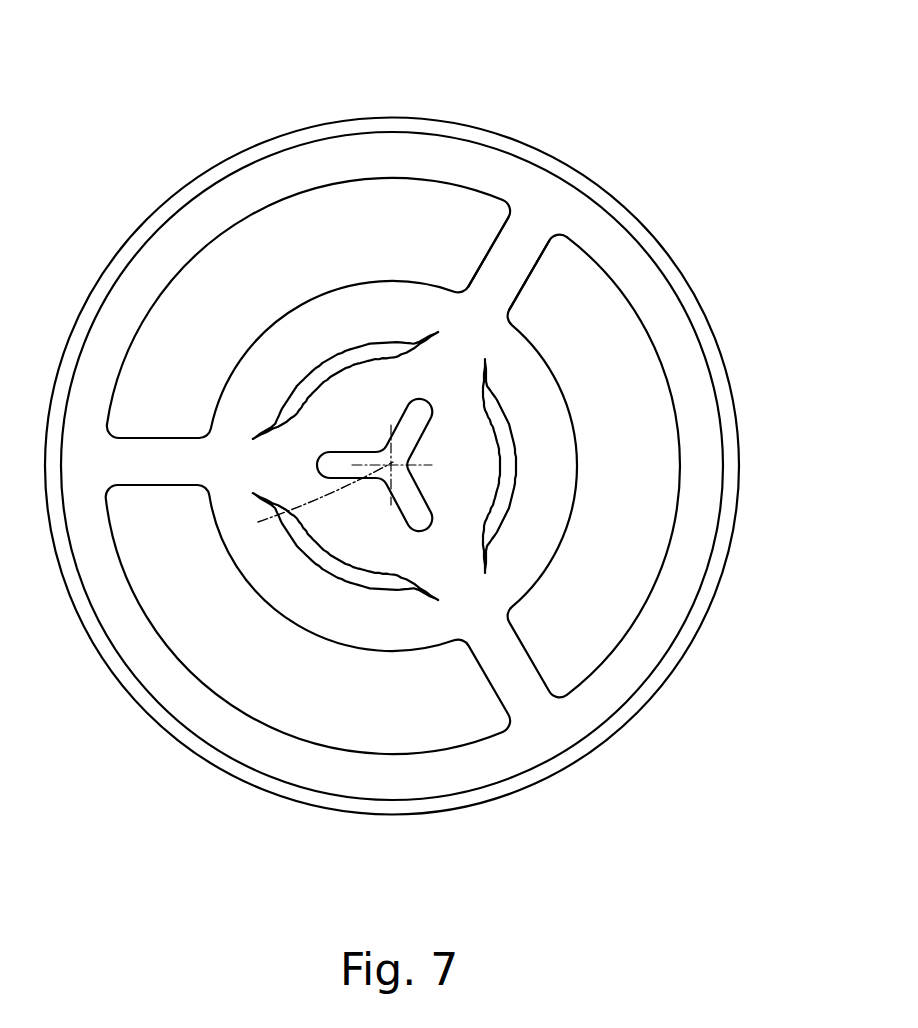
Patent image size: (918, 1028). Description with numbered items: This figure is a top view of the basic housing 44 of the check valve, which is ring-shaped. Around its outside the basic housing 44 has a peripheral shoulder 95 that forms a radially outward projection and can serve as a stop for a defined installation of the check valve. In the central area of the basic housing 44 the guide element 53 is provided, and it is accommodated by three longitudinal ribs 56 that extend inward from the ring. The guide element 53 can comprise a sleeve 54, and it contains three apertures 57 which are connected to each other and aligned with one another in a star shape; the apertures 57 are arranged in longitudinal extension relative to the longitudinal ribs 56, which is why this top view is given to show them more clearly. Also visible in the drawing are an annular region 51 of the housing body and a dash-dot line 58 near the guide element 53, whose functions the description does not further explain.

The basic housing 44 is at (405, 90).
The peripheral shoulder 95 is at (498, 133).
The annular ring portion 51 is at (600, 367).
The sleeve 54 is at (552, 498).
The longitudinal rib 56 is at (517, 250).
The aperture 57 is at (395, 415).
The guide element 53 is at (479, 482).
The axis line 58 is at (313, 510).